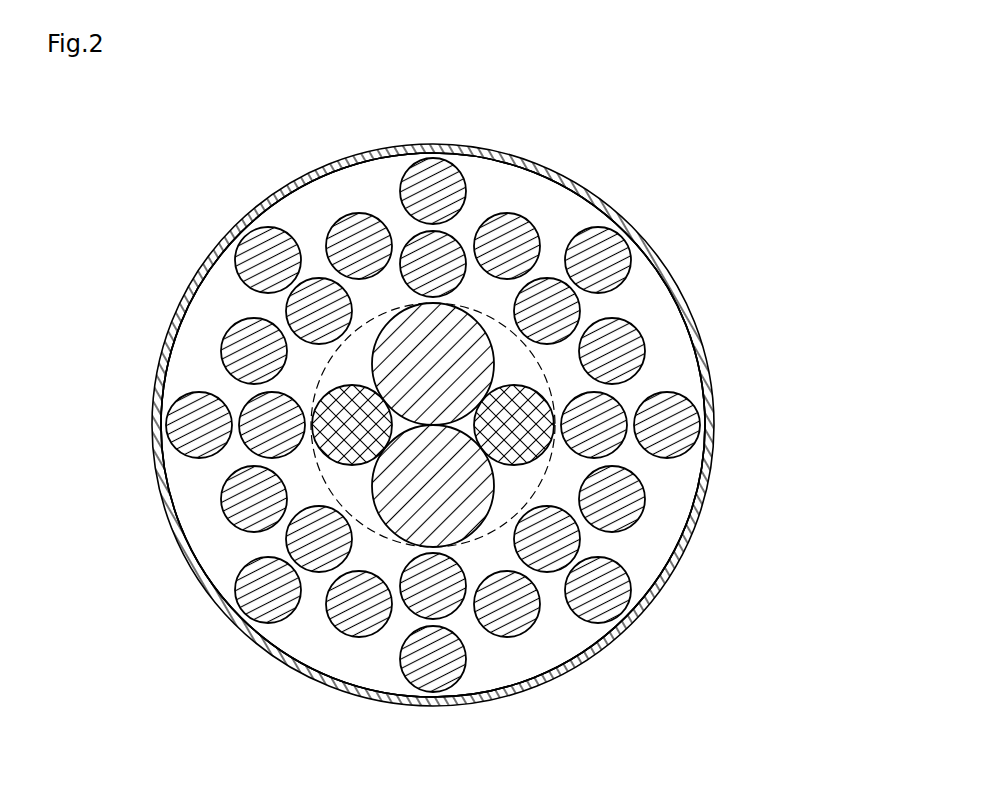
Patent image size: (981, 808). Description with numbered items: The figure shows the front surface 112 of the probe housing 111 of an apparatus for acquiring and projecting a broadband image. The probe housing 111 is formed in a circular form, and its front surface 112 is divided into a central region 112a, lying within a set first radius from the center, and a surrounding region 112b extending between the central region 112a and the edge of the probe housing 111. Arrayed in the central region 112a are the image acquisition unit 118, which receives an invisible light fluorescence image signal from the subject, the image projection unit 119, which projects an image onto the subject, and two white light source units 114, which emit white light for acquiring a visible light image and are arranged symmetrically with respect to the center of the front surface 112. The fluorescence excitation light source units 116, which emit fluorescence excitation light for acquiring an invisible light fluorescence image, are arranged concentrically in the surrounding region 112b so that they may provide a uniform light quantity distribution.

The probe housing 111 is at (280, 195).
The front surface 112 is at (677, 368).
The central region 112a is at (325, 363).
The surrounding region 112b is at (340, 193).
The white light source unit 114 is at (527, 407).
The fluorescence excitation light source unit 116 is at (427, 182).
The image acquisition unit 118 is at (462, 338).
The image projection unit 119 is at (412, 518).